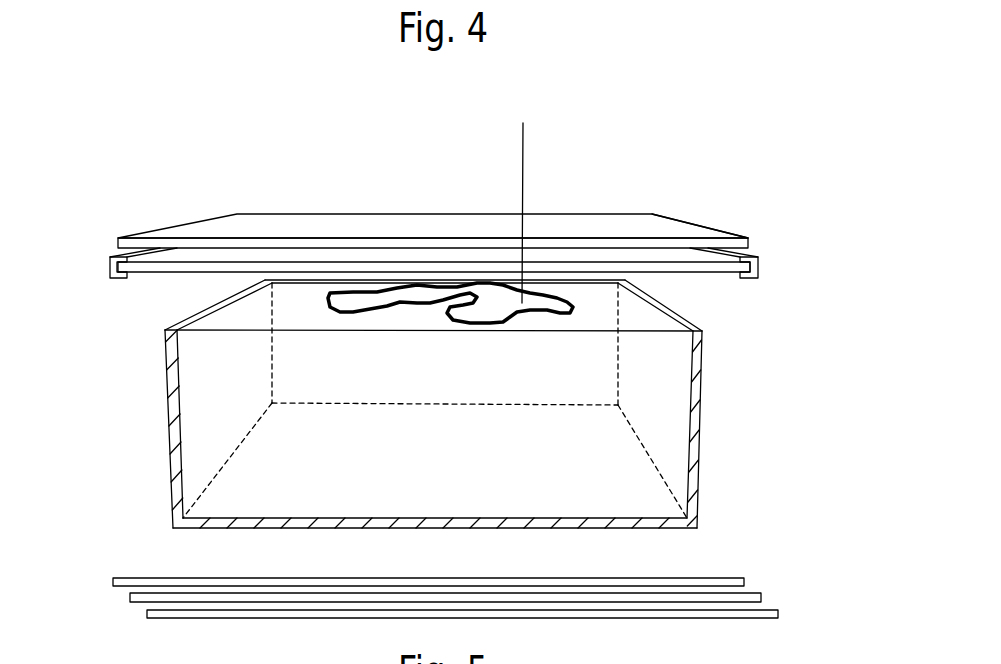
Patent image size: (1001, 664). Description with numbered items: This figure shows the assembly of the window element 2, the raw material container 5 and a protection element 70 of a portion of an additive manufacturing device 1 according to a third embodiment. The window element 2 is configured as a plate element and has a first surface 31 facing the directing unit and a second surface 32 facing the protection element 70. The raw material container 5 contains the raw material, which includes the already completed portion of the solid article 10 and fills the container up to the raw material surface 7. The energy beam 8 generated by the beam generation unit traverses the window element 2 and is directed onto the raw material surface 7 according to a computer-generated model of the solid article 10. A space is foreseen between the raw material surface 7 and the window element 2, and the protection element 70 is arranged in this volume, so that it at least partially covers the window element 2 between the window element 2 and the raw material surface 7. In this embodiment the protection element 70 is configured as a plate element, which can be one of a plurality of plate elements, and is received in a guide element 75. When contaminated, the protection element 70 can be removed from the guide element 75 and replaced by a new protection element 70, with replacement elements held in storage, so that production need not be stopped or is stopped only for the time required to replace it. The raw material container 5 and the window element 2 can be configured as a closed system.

The additive manufacturing device 1 is at (681, 162).
The window element 2 is at (660, 233).
The raw material container 5 is at (697, 460).
The raw material surface 7 is at (238, 320).
The energy beam 8 is at (523, 158).
The solid article 10 is at (483, 300).
The first surface 31 is at (258, 230).
The second surface 32 is at (120, 248).
The protection element 70 is at (160, 272).
The guide element 75 is at (760, 279).